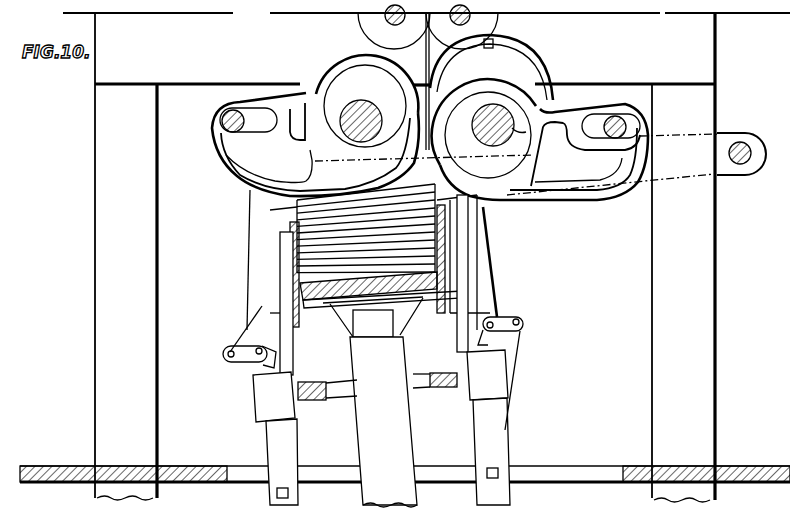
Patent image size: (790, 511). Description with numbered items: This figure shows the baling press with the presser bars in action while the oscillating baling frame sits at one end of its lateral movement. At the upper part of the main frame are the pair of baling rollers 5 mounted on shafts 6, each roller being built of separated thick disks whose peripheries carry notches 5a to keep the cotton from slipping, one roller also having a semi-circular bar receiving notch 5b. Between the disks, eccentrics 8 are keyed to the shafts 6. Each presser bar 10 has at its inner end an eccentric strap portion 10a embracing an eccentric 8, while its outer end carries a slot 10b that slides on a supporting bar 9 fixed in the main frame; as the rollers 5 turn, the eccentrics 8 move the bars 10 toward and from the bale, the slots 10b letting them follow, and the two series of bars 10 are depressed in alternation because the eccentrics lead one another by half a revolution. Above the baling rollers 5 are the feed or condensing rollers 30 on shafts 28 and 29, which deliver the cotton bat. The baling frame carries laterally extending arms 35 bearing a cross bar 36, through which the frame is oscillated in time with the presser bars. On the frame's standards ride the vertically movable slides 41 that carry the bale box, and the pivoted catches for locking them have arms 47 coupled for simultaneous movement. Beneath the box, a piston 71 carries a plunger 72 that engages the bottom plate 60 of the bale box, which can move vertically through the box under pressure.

The baling roller 5 is at (511, 78).
The notch 5a is at (520, 133).
The bar receiving notch 5b is at (500, 55).
The shaft 6 is at (393, 88).
The eccentric 8 is at (327, 78).
The supporting bar 9 is at (230, 132).
The presser bar 10 is at (277, 193).
The eccentric strap portion 10a is at (556, 67).
The slot 10b is at (647, 80).
The shaft 28 is at (394, 27).
The shaft 29 is at (462, 27).
The feed roller 30 is at (464, 506).
The arm 35 is at (734, 176).
The cross bar 36 is at (756, 163).
The slide 41 is at (262, 403).
The arm 47 is at (247, 356).
The bottom plate 60 is at (300, 286).
The piston 71 is at (403, 432).
The plunger 72 is at (373, 323).